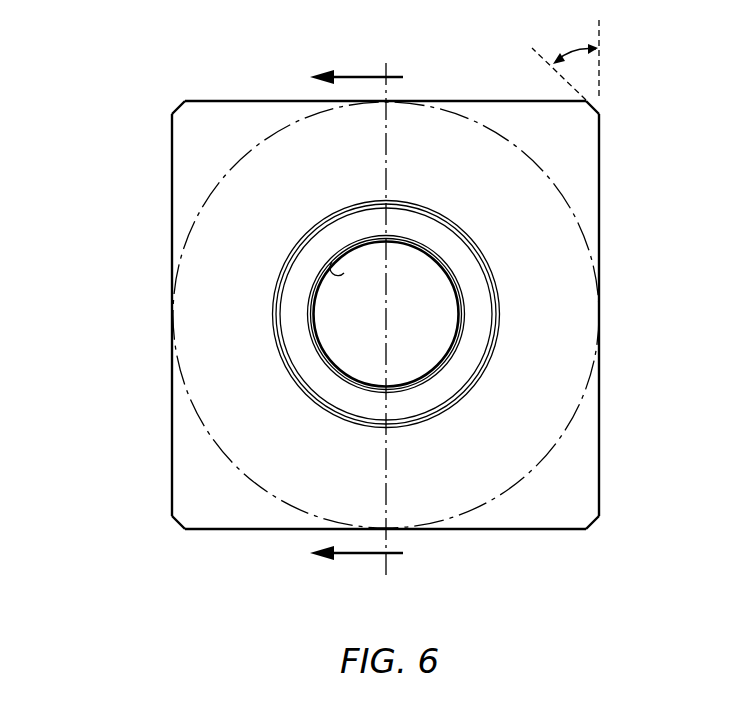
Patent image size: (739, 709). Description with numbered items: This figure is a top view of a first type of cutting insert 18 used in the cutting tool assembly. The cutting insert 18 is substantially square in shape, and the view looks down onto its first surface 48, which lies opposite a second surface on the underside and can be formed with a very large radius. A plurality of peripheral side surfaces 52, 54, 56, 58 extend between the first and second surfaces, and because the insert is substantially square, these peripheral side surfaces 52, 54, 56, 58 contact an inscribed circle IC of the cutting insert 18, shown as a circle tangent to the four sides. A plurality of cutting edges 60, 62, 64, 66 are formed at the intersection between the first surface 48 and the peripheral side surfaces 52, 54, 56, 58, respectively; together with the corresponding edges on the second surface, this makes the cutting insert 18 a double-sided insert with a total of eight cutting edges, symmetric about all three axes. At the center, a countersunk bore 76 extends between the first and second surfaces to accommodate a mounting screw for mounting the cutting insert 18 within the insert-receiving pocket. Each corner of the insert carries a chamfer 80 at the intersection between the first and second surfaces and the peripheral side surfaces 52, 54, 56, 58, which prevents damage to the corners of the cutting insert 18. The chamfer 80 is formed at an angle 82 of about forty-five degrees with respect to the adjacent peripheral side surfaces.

The cutting insert 18 is at (90, 197).
The first surface 48 is at (213, 124).
The peripheral side surface 52 is at (470, 94).
The peripheral side surface 54 is at (166, 439).
The peripheral side surface 56 is at (486, 541).
The peripheral side surface 58 is at (605, 439).
The cutting edge 60 is at (243, 100).
The cutting edge 62 is at (170, 236).
The cutting edge 64 is at (225, 531).
The cutting edge 66 is at (601, 232).
The countersunk bore 76 is at (346, 258).
The chamfer 80 is at (177, 108).
The angle 82 is at (571, 52).
The inscribed circle IC is at (216, 448).